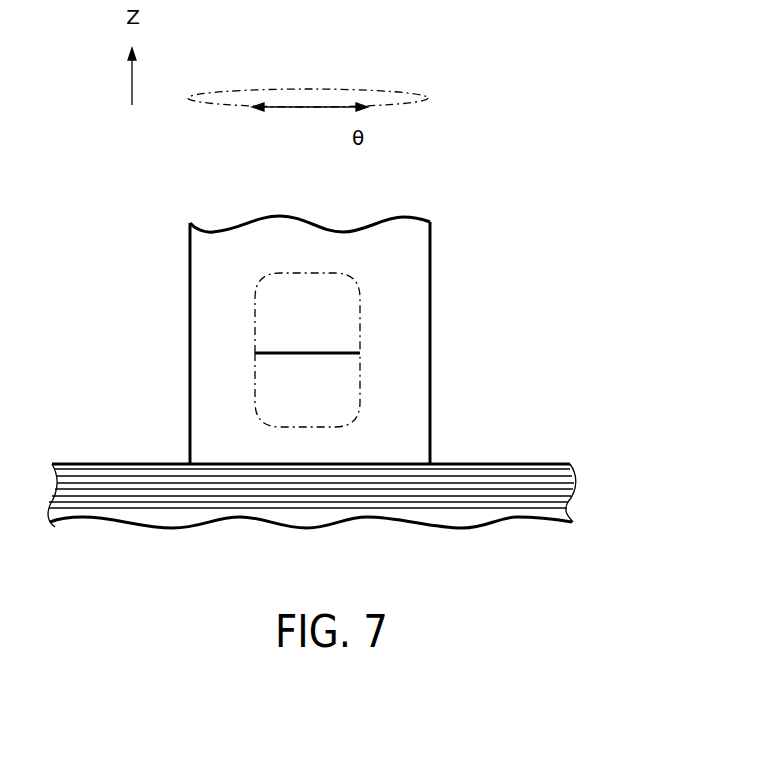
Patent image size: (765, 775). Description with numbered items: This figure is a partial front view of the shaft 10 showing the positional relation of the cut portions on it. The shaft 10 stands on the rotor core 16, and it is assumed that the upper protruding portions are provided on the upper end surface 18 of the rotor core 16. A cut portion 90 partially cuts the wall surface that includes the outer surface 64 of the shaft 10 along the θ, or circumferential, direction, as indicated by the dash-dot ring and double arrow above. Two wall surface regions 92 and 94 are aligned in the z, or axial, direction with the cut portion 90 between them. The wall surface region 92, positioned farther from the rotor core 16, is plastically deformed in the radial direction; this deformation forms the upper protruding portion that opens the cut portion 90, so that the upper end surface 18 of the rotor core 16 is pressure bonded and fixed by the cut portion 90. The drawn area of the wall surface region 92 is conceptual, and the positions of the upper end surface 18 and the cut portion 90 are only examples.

The shaft 10 is at (435, 182).
The rotor core 16 is at (548, 462).
The upper end surface of the rotor core 18 is at (485, 464).
The outer surface of the shaft 64 is at (408, 248).
The cut portion 90 is at (348, 352).
The wall surface region 92 is at (335, 312).
The wall surface region 94 is at (338, 393).